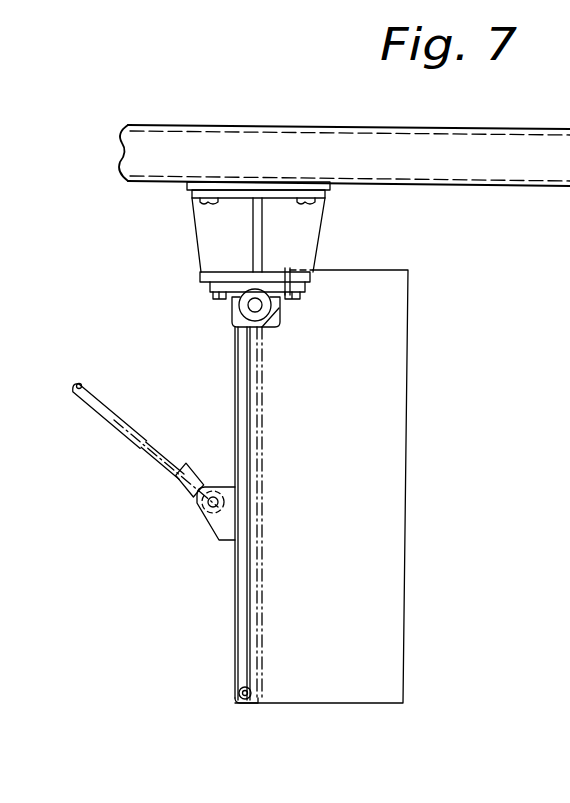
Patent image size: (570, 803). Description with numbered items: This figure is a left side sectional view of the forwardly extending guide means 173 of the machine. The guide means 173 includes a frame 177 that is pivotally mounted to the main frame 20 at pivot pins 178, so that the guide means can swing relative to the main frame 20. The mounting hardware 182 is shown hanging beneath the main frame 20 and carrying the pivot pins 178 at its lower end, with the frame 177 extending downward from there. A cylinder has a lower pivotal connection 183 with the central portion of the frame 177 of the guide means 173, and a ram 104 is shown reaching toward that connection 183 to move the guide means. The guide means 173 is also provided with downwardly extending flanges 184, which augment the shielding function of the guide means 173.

The main frame 20 is at (292, 126).
The mounting bracket 182 is at (207, 231).
The pivot pins 178 is at (252, 305).
The downwardly extending flanges 184 is at (354, 406).
The frame 177 is at (233, 393).
The guide means 173 is at (228, 597).
The lower pivotal connection 183 is at (198, 505).
The ram 104 is at (148, 452).